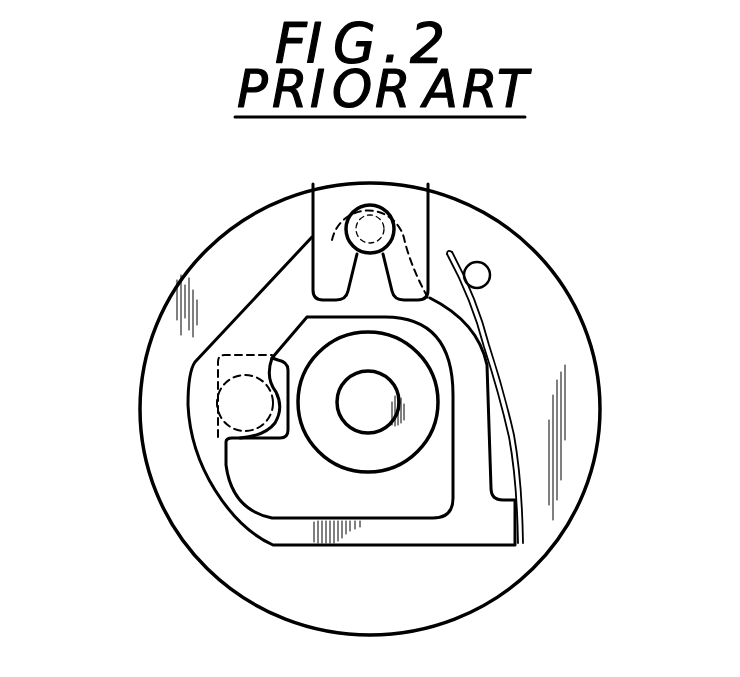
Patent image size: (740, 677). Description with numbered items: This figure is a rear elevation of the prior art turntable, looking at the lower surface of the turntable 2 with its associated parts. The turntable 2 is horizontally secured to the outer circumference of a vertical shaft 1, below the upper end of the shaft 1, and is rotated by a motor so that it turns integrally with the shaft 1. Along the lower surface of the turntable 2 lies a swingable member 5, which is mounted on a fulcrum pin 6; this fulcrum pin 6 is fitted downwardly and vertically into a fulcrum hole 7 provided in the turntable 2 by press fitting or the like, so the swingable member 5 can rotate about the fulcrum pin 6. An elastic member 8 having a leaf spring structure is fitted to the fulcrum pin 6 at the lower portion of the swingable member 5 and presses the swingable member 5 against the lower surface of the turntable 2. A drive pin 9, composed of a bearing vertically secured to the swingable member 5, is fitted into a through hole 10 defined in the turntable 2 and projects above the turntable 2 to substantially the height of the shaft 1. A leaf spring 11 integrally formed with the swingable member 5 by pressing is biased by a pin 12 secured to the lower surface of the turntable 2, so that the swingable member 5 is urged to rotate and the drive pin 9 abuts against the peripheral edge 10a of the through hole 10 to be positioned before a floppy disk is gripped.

The vertical shaft 1 is at (363, 422).
The turntable 2 is at (568, 349).
The swingable member 5 is at (273, 303).
The fulcrum pin 6 is at (378, 222).
The fulcrum hole 7 is at (340, 238).
The elastic member 8 is at (335, 188).
The drive pin 9 is at (240, 408).
The through hole 10 is at (243, 436).
The peripheral edge 10a is at (225, 380).
The leaf spring 11 is at (483, 320).
The pin 12 is at (482, 272).